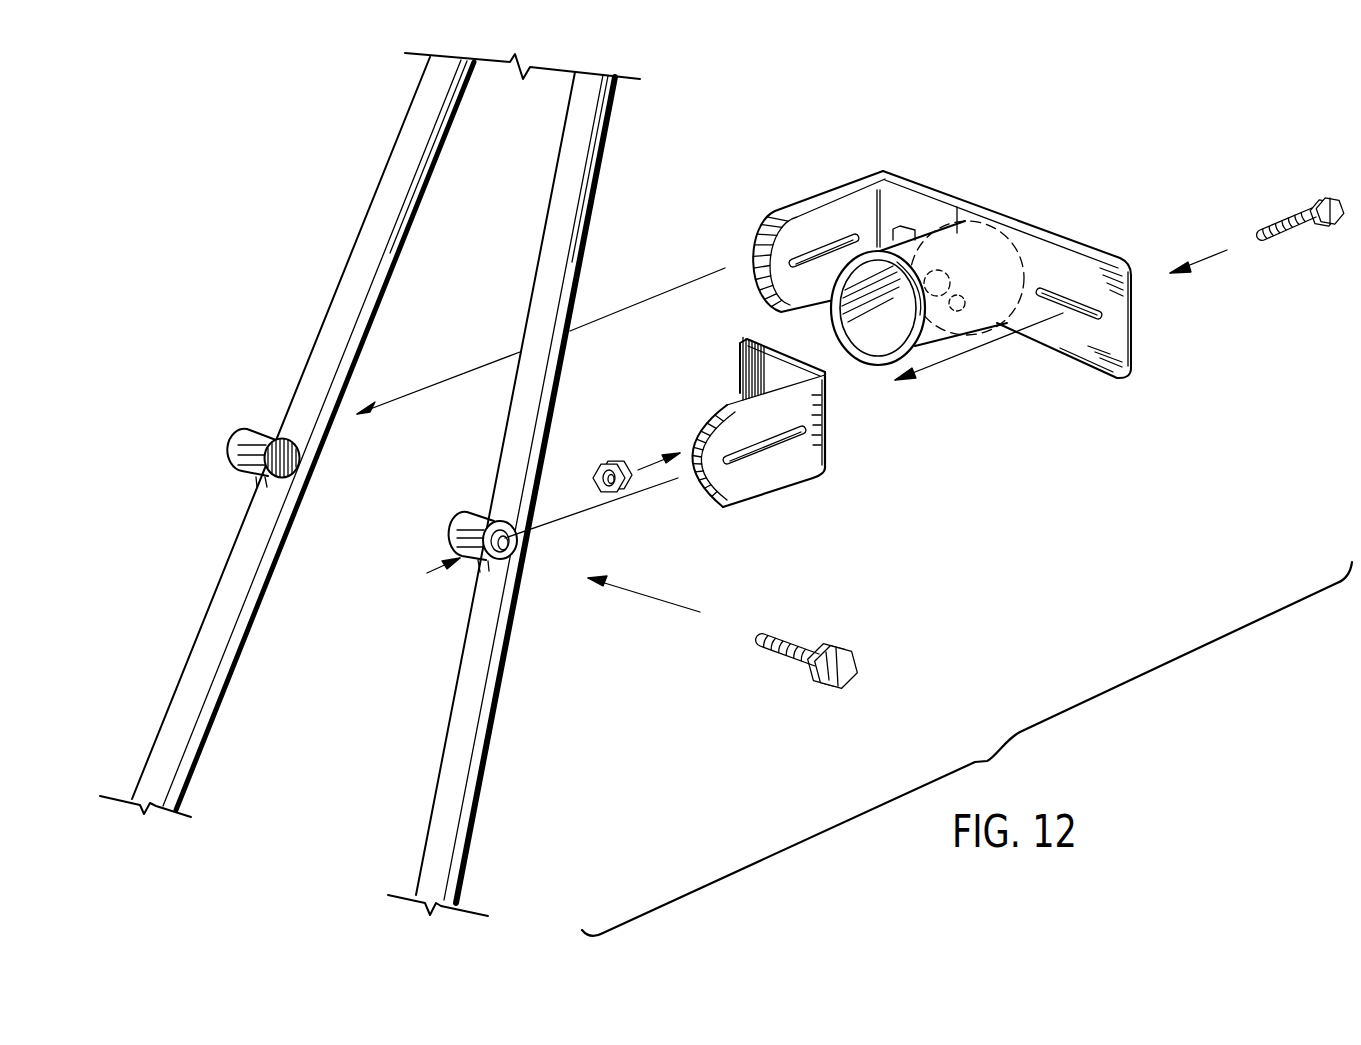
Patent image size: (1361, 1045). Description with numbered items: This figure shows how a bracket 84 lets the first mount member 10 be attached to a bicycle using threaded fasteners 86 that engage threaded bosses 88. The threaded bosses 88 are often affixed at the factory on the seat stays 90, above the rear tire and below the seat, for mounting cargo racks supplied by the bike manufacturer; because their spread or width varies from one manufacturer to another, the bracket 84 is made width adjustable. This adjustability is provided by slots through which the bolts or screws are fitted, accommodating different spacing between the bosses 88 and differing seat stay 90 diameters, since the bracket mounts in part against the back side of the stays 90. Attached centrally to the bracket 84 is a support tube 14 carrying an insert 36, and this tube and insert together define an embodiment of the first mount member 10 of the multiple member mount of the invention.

The first mount member 10 is at (998, 362).
The support tube 14 is at (875, 366).
The insert 36 is at (970, 247).
The bracket 84 is at (1052, 217).
The threaded fasteners 86 is at (857, 665).
The threaded bosses 88 is at (467, 528).
The seat stays 90 is at (448, 810).